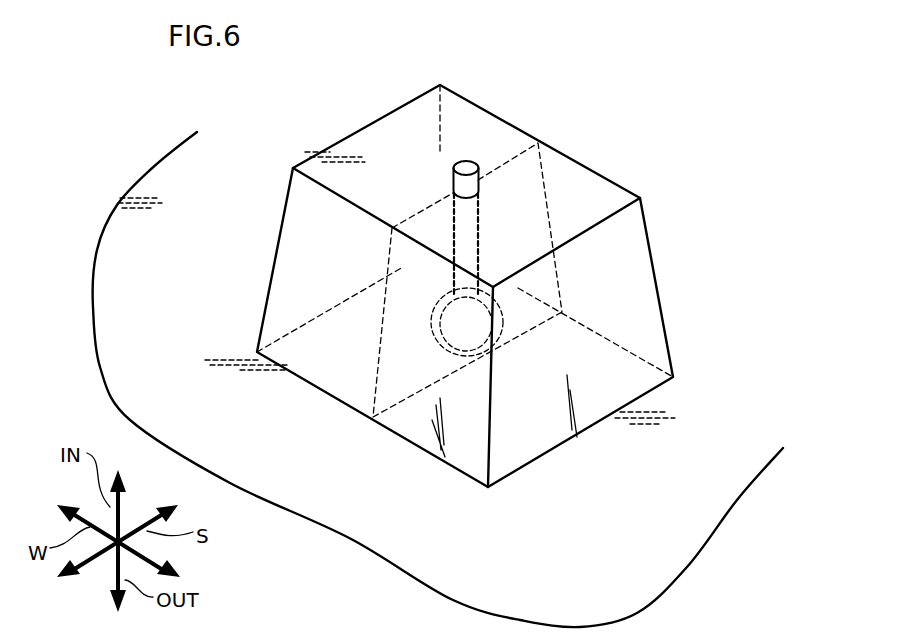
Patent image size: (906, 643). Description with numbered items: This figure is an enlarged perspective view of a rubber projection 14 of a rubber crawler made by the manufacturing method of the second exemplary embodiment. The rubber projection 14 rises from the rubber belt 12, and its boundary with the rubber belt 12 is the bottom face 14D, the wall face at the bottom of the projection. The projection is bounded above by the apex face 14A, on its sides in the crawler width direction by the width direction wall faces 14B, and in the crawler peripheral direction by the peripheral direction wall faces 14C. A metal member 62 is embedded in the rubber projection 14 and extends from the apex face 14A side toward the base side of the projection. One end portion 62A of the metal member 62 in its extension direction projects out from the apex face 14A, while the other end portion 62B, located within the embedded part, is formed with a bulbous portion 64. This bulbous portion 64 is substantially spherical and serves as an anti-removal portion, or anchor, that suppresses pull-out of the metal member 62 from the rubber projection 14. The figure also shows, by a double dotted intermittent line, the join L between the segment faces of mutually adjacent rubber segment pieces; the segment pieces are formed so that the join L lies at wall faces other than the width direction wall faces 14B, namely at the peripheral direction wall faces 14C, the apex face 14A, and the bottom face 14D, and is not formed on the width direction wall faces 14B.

The rubber belt 12 is at (691, 516).
The rubber projection 14 is at (627, 190).
The apex face 14A is at (585, 190).
The width direction wall faces 14B is at (602, 305).
The peripheral direction wall faces 14C is at (453, 122).
The bottom face 14D is at (503, 447).
The metal member 62 is at (477, 157).
The one end portion 62A is at (465, 161).
The other end portion 62B is at (470, 356).
The bulbous portion 64 is at (442, 292).
The join L is at (375, 376).